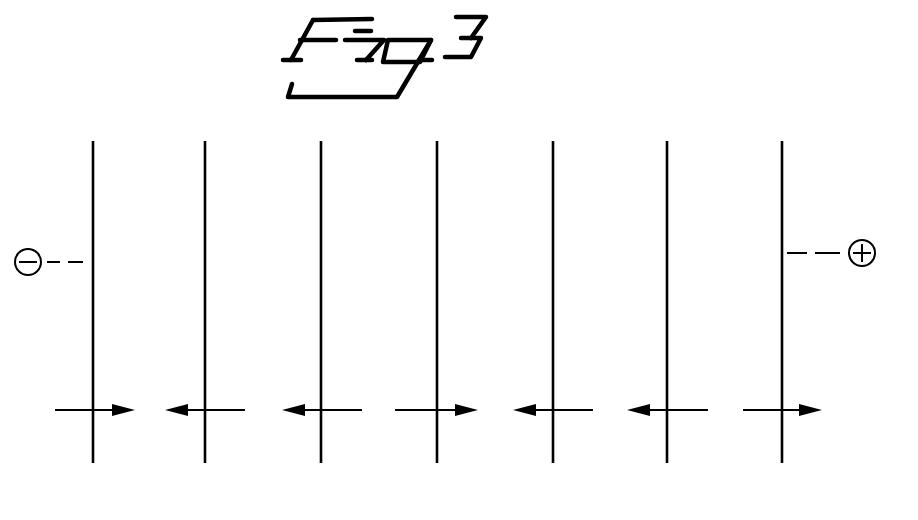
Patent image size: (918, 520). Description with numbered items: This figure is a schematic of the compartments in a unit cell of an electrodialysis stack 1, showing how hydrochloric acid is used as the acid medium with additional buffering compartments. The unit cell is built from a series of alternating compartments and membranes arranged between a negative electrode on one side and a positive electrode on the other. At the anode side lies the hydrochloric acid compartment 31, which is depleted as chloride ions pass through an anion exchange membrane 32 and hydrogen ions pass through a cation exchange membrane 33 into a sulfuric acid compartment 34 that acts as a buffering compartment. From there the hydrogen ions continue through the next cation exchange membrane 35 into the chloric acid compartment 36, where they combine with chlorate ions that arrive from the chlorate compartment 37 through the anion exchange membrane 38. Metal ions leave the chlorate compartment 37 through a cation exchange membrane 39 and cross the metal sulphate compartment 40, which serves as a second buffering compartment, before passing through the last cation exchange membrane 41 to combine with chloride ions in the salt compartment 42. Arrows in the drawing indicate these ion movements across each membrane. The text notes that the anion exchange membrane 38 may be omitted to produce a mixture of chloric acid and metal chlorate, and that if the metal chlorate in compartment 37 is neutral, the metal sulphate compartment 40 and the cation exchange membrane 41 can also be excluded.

The electrodialysis cell 1 is at (800, 131).
The hydrochloric acid compartment 31 is at (758, 372).
The anion exchange membrane 32 is at (92, 150).
The cation exchange membrane 33 is at (666, 150).
The sulfuric acid compartment 34 is at (637, 372).
The cation exchange membrane 35 is at (552, 150).
The chloric acid compartment 36 is at (494, 372).
The chlorate compartment 37 is at (356, 372).
The anion exchange membrane 38 is at (436, 150).
The cation exchange membrane 39 is at (320, 150).
The metal sulphate compartment 40 is at (268, 372).
The cation exchange membrane 41 is at (204, 150).
The salt compartment 42 is at (150, 372).